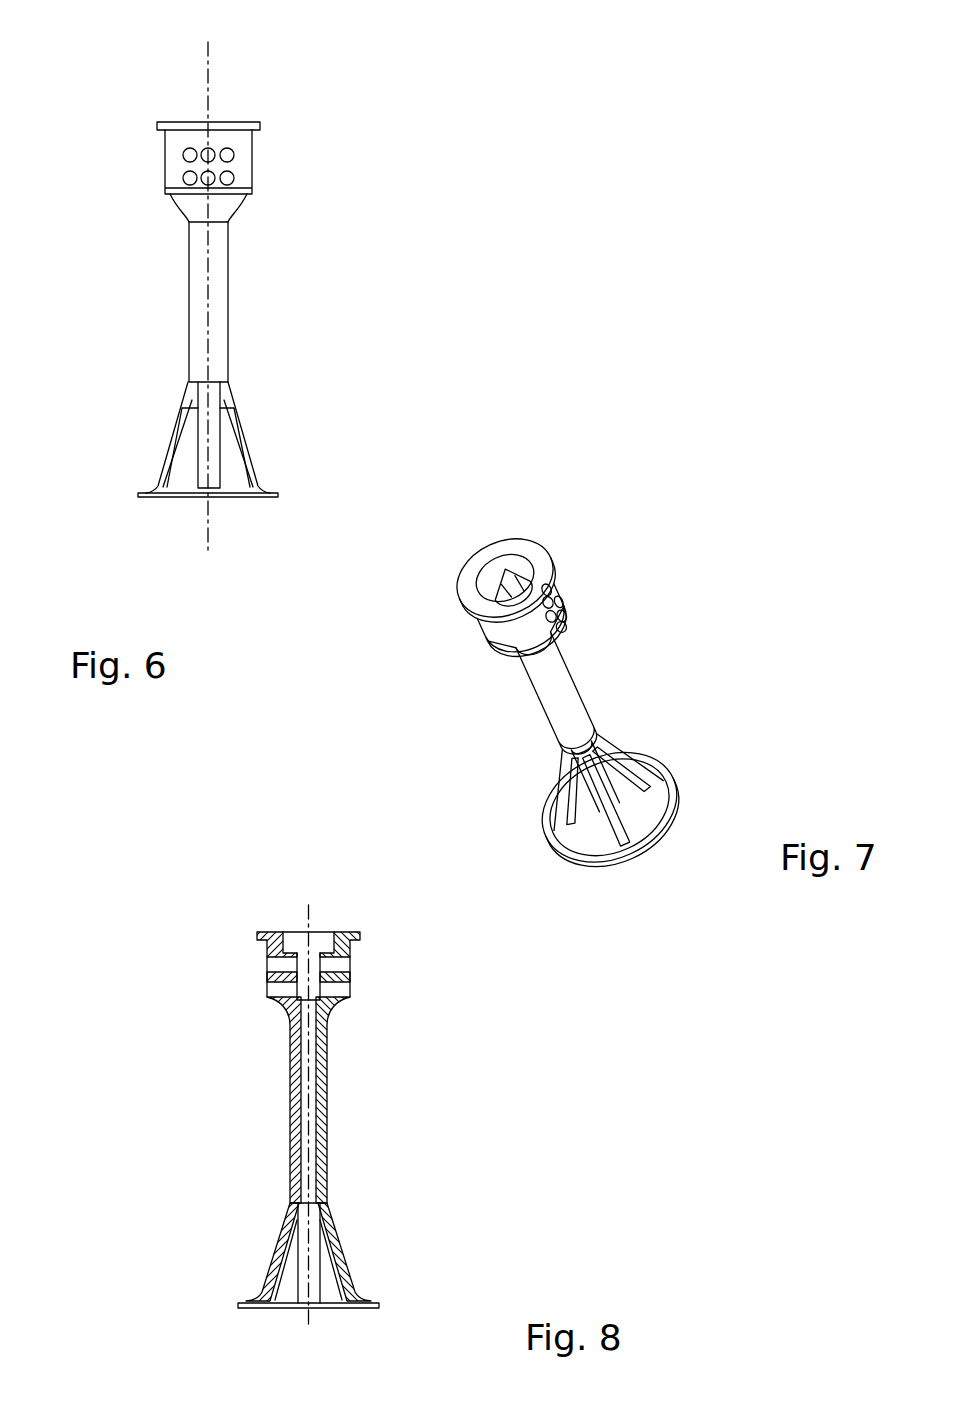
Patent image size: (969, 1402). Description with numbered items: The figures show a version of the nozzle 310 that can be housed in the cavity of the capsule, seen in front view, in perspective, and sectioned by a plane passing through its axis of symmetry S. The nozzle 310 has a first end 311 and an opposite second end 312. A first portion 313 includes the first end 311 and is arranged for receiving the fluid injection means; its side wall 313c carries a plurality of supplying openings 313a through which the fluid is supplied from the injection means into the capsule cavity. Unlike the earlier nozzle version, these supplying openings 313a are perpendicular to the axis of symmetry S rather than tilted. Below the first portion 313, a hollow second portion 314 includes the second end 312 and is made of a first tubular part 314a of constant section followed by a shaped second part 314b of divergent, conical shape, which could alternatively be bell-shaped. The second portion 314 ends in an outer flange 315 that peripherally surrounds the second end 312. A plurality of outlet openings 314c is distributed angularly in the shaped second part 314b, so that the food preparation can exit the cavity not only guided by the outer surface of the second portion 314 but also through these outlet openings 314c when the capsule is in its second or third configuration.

In FIG. 6, the nozzle 310 is at (166, 92).
In FIG. 7, the nozzle 310 is at (563, 494).
In FIG. 8, the nozzle 310 is at (402, 958).
In FIG. 6, the first end 311 is at (238, 110).
In FIG. 7, the first end 311 is at (488, 548).
In FIG. 8, the first end 311 is at (318, 918).
In FIG. 6, the second end 312 is at (182, 518).
In FIG. 7, the second end 312 is at (666, 858).
In FIG. 8, the second end 312 is at (264, 1334).
In FIG. 6, the first portion 313 is at (148, 160).
In FIG. 7, the first portion 313 is at (470, 640).
In FIG. 8, the first portion 313 is at (245, 899).
In FIG. 6, the supplying openings 313a is at (230, 156).
In FIG. 7, the supplying openings 313a is at (556, 612).
In FIG. 8, the supplying openings 313a is at (272, 968).
In FIG. 7, the side wall 313c is at (520, 563).
In FIG. 8, the side wall 313c is at (293, 938).
In FIG. 6, the second portion 314 is at (178, 310).
In FIG. 7, the second portion 314 is at (536, 712).
In FIG. 8, the second portion 314 is at (320, 1196).
In FIG. 6, the first tubular part 314a is at (218, 290).
In FIG. 7, the first tubular part 314a is at (556, 683).
In FIG. 8, the first tubular part 314a is at (335, 1150).
In FIG. 6, the shaped second part 314b is at (200, 445).
In FIG. 7, the shaped second part 314b is at (558, 782).
In FIG. 8, the shaped second part 314b is at (270, 1268).
In FIG. 6, the outlet openings 314c is at (244, 446).
In FIG. 7, the outlet openings 314c is at (622, 832).
In FIG. 8, the outlet openings 314c is at (339, 1316).
In FIG. 6, the outer flange 315 is at (270, 498).
In FIG. 7, the outer flange 315 is at (640, 760).
In FIG. 8, the outer flange 315 is at (372, 1300).
In FIG. 6, the axis of symmetry S is at (210, 522).